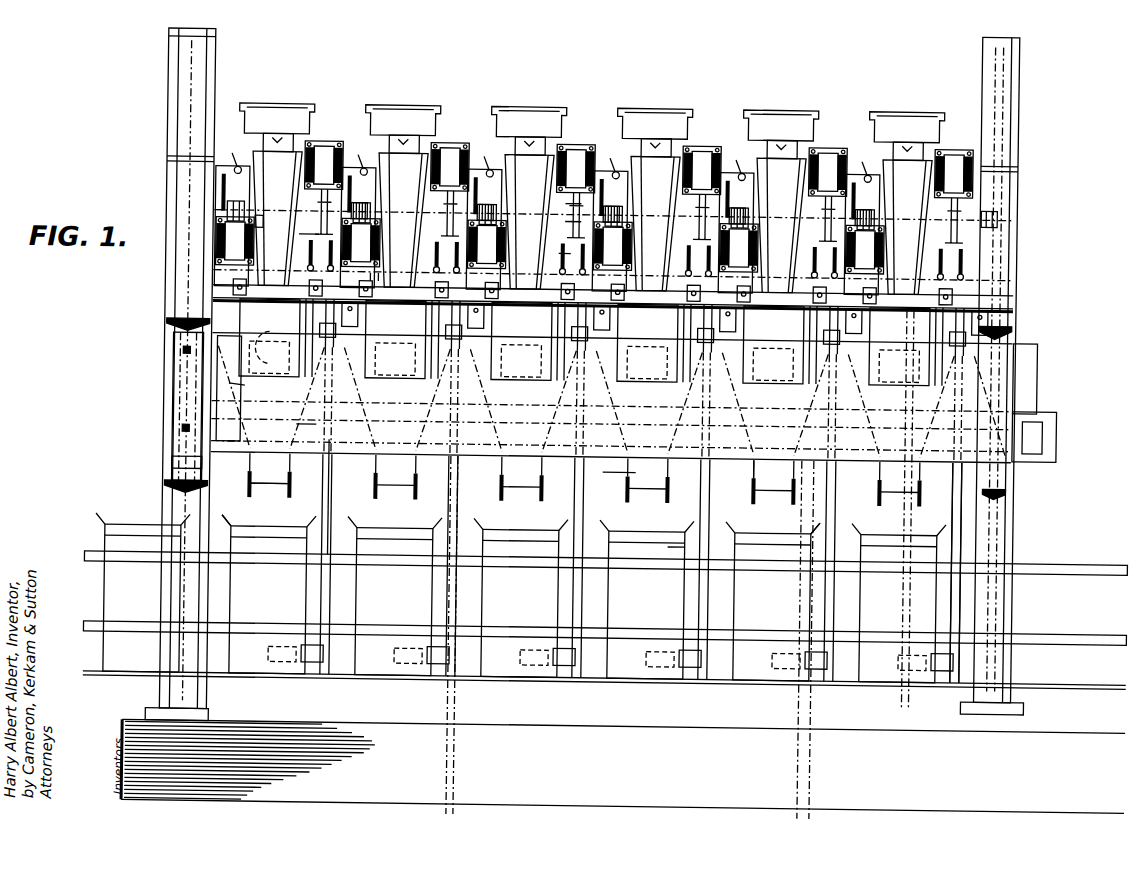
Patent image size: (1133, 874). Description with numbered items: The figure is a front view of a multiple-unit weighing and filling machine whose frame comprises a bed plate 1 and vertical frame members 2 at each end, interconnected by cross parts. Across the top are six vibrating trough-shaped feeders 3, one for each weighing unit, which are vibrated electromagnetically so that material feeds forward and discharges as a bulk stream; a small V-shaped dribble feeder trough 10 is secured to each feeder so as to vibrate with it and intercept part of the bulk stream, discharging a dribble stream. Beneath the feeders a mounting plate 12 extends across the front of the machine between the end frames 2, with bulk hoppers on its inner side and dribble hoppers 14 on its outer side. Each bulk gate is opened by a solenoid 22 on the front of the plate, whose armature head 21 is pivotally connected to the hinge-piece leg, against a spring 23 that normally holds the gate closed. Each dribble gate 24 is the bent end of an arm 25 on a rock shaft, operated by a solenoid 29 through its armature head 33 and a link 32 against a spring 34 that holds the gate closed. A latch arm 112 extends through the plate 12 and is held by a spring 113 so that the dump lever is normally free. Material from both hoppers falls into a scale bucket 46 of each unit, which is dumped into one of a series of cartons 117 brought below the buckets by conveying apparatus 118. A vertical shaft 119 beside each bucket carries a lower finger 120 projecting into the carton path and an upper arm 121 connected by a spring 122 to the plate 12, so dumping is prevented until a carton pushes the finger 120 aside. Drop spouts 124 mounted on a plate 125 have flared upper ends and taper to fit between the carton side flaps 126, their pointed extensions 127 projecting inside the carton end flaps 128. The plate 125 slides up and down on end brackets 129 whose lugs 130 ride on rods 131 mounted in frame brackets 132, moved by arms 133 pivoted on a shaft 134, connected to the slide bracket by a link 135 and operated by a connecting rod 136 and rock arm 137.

The bed plate 1 is at (330, 733).
The vertical frame members 2 is at (170, 104).
The vibrating trough-shaped feeders 3 is at (300, 110).
The dribble feeder trough 10 is at (526, 146).
The mounting plate 12 is at (216, 182).
The dribble hoppers 14 is at (262, 165).
The head of the armature of the solenoid 21 is at (228, 207).
The solenoid 22 is at (232, 240).
The spring 23 is at (222, 190).
The gate 24 is at (548, 306).
The arm 25 is at (560, 250).
The solenoid 29 is at (325, 145).
The link 32 is at (575, 217).
The head of the armature of the solenoid 33 is at (567, 201).
The spring 34 is at (613, 246).
The scale bucket 46 is at (300, 327).
The arm 112 is at (258, 212).
The spring 113 is at (305, 242).
The cartons 117 is at (673, 540).
The conveying apparatus 118 is at (718, 678).
The vertical shaft 119 is at (961, 507).
The finger 120 is at (922, 700).
The arm 121 is at (335, 330).
The spring 122 is at (375, 272).
The drop spouts 124 is at (243, 382).
The plate 125 is at (1003, 377).
The side flaps 126 is at (293, 530).
The pointed extensions 127 is at (249, 487).
The carton end flaps 128 is at (232, 524).
The end brackets 129 is at (170, 386).
The lugs 130 is at (186, 350).
The rods 131 is at (178, 463).
The brackets 132 is at (170, 326).
The arms 133 is at (228, 453).
The shaft 134 is at (300, 422).
The link 135 is at (218, 388).
The connecting rod 136 is at (800, 514).
The rock arm 137 is at (755, 468).